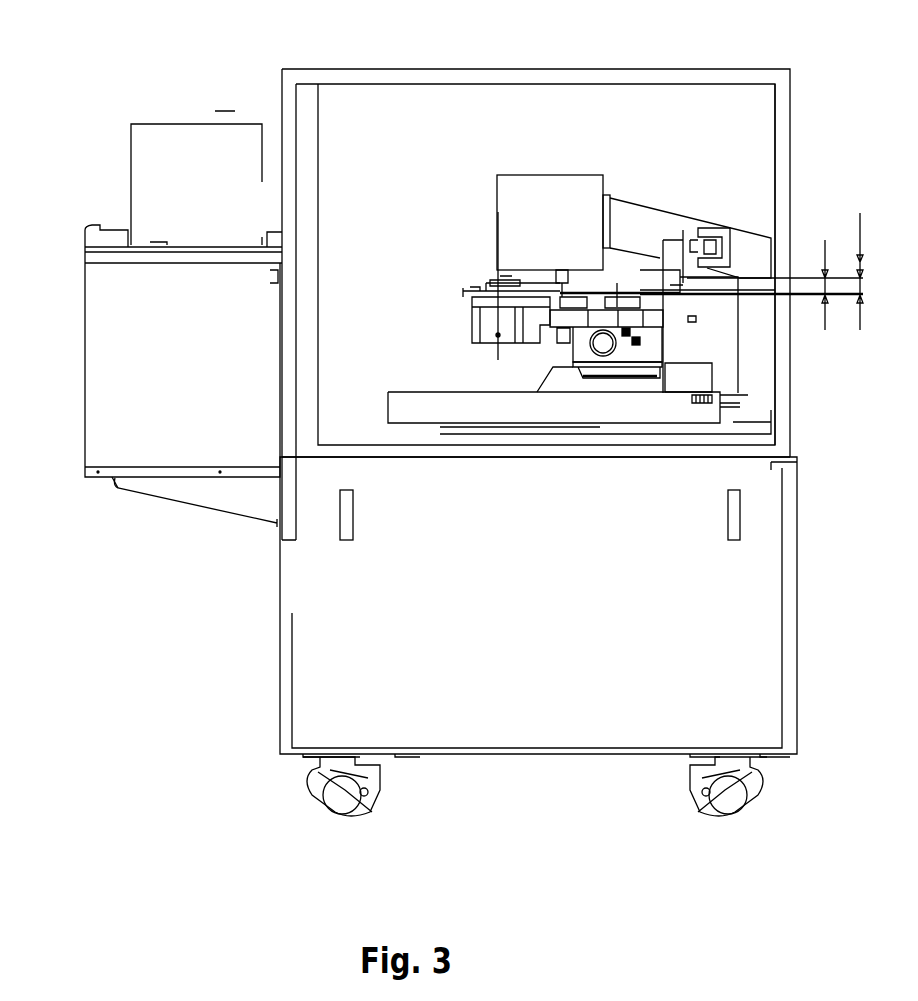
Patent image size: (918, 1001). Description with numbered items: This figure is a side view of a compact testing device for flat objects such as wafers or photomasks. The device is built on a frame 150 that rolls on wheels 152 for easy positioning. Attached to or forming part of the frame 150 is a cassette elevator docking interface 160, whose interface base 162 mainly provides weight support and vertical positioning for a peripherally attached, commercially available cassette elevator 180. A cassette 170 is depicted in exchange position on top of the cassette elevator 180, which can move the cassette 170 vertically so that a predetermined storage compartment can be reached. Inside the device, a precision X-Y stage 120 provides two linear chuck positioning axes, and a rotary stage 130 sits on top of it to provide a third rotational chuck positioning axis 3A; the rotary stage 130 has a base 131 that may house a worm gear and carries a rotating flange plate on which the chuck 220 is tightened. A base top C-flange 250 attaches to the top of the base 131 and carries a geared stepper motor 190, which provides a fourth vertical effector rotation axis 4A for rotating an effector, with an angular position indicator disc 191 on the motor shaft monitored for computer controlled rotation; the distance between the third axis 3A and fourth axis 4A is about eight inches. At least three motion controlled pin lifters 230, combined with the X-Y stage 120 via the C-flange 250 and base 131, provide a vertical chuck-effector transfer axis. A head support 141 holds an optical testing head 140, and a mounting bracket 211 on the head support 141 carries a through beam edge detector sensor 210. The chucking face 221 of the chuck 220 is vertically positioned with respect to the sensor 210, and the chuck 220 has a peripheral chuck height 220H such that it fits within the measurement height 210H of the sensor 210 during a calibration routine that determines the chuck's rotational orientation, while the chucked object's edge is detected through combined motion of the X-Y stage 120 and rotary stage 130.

The precision X-Y stage 120 is at (476, 410).
The rotary stage 130 is at (665, 335).
The base 131 is at (657, 348).
The optical testing head 140 is at (508, 188).
The head support 141 is at (640, 225).
The frame 150 is at (310, 667).
The wheels 152 is at (332, 802).
The cassette elevator docking interface 160 is at (207, 507).
The interface base 162 is at (117, 475).
The cassette 170 is at (150, 142).
The cassette elevator 180 is at (110, 413).
The geared stepper motor 190 is at (481, 330).
The angular position indicator disc 191 is at (507, 280).
The through beam edge detector sensor 210 is at (685, 268).
The measurement height 210H is at (851, 271).
The mounting bracket 211 is at (718, 227).
The chuck 220 is at (653, 277).
The peripheral chuck height 220H is at (816, 279).
The chucking face 221 is at (670, 273).
The pin lifters 230 is at (562, 265).
The base top C-flange 250 is at (540, 297).
The third rotational chuck positioning axis 3A is at (690, 318).
The fourth vertical effector rotation axis 4A is at (497, 277).